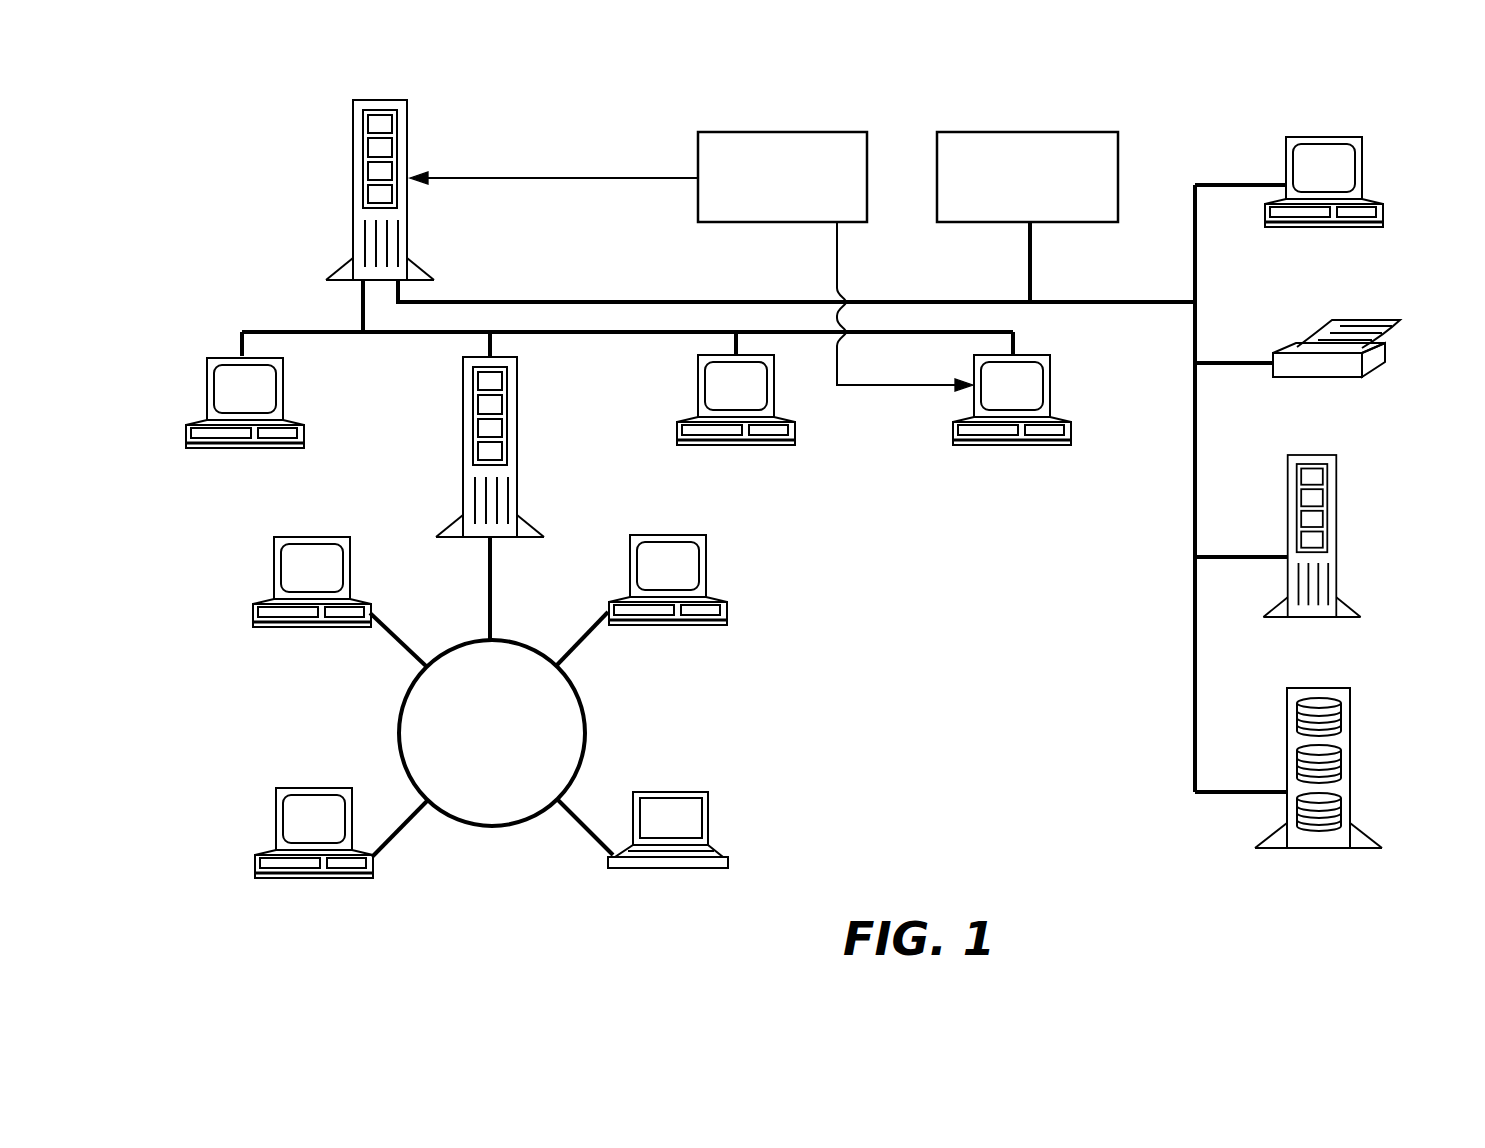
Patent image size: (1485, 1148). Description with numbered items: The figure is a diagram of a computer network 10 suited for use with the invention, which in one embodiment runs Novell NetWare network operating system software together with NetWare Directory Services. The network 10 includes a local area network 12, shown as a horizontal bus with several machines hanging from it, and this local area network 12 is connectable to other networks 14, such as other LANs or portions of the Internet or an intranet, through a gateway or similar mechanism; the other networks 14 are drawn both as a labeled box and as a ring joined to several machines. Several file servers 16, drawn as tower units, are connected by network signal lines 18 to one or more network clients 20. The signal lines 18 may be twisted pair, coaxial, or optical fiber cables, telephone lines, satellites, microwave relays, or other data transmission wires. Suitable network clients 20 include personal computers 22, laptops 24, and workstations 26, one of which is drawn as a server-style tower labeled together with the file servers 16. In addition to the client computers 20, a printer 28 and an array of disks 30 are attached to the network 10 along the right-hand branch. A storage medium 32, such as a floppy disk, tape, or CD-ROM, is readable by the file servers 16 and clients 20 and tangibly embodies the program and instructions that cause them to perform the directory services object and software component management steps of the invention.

The computer network 10 is at (270, 198).
The local area network 12 is at (325, 332).
The other networks 14 is at (1020, 132).
The file server 16 is at (890, 357).
The network signal line 18 is at (540, 302).
The network client 20 is at (842, 503).
The personal computer 22 is at (1072, 432).
The laptop 24 is at (708, 808).
The workstation 26 is at (1337, 535).
The printer 28 is at (1385, 352).
The array of disks 30 is at (1350, 765).
The storage medium 32 is at (770, 132).